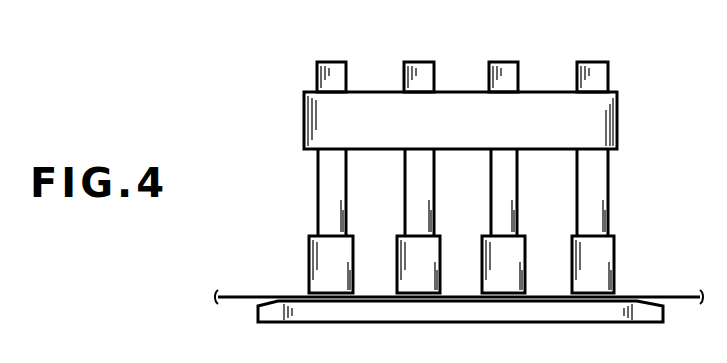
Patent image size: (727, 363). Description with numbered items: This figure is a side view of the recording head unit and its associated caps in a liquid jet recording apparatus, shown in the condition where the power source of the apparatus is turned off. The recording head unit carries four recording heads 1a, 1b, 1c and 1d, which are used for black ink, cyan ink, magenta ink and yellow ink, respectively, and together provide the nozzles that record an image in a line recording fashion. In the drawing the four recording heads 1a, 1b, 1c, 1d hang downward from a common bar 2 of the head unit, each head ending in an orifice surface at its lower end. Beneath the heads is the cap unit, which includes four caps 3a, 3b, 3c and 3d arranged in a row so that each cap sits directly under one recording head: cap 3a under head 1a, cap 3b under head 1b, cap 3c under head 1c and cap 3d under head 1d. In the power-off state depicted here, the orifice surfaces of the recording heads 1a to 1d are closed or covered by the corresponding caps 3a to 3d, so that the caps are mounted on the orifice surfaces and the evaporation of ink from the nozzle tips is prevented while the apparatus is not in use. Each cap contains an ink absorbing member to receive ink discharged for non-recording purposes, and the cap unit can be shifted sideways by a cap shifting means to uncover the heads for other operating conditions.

The recording head 1a is at (599, 64).
The recording head 1b is at (510, 64).
The recording head 1c is at (427, 64).
The recording head 1d is at (339, 64).
The connecting bar 2 is at (460, 120).
The cap 3a is at (617, 256).
The cap 3b is at (521, 256).
The cap 3c is at (436, 256).
The cap 3d is at (349, 256).